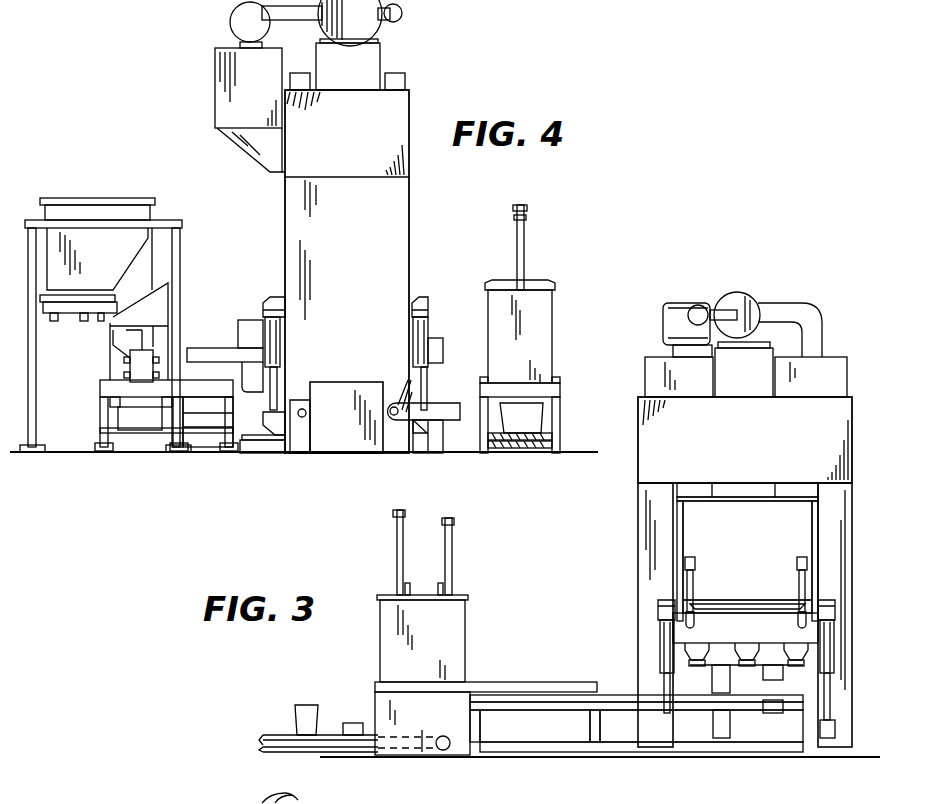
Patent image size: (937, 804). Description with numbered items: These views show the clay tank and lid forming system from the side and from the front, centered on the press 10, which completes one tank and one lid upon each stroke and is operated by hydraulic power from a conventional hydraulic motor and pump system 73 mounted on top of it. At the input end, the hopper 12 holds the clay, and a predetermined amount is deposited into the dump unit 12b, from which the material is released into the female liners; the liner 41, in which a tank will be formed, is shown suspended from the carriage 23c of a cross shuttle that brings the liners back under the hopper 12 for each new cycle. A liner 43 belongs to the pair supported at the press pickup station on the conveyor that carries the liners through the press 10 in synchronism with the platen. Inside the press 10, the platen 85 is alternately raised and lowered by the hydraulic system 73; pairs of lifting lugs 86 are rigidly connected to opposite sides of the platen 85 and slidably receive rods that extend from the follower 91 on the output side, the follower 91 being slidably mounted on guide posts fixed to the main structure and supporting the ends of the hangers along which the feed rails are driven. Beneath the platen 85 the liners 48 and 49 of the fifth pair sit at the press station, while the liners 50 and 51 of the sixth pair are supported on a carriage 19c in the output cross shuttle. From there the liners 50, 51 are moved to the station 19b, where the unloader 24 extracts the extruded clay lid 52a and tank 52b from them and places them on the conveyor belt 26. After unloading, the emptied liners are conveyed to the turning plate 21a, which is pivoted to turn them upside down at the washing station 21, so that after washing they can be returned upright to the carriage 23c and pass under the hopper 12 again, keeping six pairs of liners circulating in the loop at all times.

In FIG. 4, the press 10 is at (355, 145).
In FIG. 3, the press 10 is at (756, 443).
In FIG. 4, the hopper 12 is at (106, 261).
In FIG. 4, the dump unit 12b is at (138, 357).
In FIG. 4, the carriage 23c is at (112, 400).
In FIG. 4, the second liner 41 is at (142, 415).
In FIG. 4, the liner 43 is at (250, 378).
In FIG. 4, the washing station 21 is at (346, 426).
In FIG. 4, the turning plate 21a is at (425, 401).
In FIG. 4, the unloader 24 is at (520, 367).
In FIG. 3, the unloader 24 is at (444, 657).
In FIG. 4, the extruded clay lid 52a is at (530, 415).
In FIG. 3, the extruded clay lid 52a is at (307, 712).
In FIG. 3, the extruded clay tank 52b is at (353, 725).
In FIG. 4, the conveyor belt 26 is at (548, 439).
In FIG. 3, the conveyor belt 26 is at (278, 738).
In FIG. 3, the hydraulic motor and pump system 73 is at (764, 286).
In FIG. 3, the platen 85 is at (749, 548).
In FIG. 3, the lifting lugs 86 is at (696, 568).
In FIG. 3, the follower 91 is at (755, 636).
In FIG. 3, the liner 49 is at (712, 681).
In FIG. 3, the liner 48 is at (770, 677).
In FIG. 3, the liner 51 is at (713, 715).
In FIG. 3, the liner 50 is at (763, 713).
In FIG. 3, the carriage 19c is at (600, 726).
In FIG. 3, the station 19b is at (552, 736).